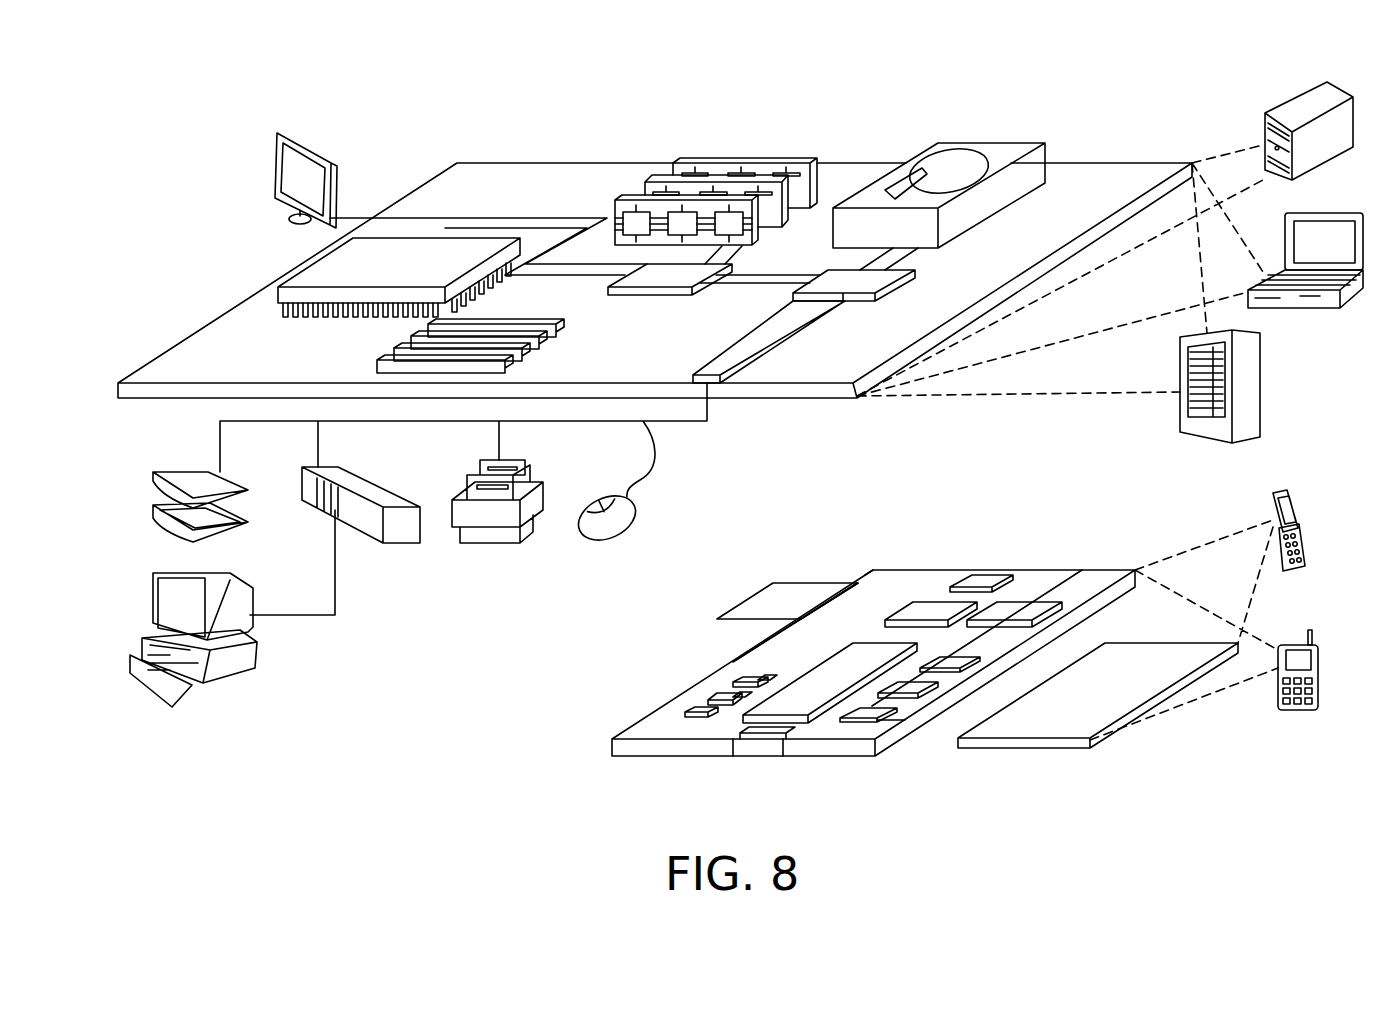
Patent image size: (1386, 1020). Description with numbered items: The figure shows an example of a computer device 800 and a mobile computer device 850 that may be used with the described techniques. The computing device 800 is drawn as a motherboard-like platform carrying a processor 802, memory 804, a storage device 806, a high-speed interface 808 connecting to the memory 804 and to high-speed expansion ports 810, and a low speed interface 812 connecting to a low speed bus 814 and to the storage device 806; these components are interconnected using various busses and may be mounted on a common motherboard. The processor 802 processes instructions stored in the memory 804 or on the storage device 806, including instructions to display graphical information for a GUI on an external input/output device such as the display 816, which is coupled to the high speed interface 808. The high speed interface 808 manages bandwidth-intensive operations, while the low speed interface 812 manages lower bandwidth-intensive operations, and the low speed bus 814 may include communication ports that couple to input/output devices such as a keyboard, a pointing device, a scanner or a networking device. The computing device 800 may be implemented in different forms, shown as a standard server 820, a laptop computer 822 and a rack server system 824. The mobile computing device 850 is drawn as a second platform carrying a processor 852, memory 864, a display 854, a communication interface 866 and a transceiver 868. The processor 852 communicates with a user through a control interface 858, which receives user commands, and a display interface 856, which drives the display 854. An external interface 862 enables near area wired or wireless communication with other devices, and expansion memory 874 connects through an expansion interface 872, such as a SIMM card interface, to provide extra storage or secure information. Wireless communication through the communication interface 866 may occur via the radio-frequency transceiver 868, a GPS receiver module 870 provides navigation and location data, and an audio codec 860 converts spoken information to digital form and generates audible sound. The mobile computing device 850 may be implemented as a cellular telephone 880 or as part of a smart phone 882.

The computing device 800 is at (408, 112).
The processor 802 is at (303, 268).
The memory 804 is at (750, 160).
The storage device 806 is at (976, 143).
The high-speed interface 808 is at (683, 272).
The high-speed expansion ports 810 is at (405, 356).
The low speed interface 812 is at (826, 287).
The low speed bus 814 is at (712, 375).
The display 816 is at (280, 134).
The standard server 820 is at (1285, 112).
The laptop computer 822 is at (1340, 213).
The rack server system 824 is at (1262, 388).
The mobile computer device 850 is at (567, 764).
The processor 852 is at (800, 690).
The display 854 is at (1137, 655).
The display interface 856 is at (875, 713).
The control interface 858 is at (915, 688).
The audio codec 860 is at (953, 660).
The external interface 862 is at (760, 757).
The memory 864 is at (712, 693).
The communication interface 866 is at (930, 605).
The transceiver 868 is at (1022, 600).
The GPS receiver module 870 is at (985, 578).
The expansion interface 872 is at (858, 580).
The expansion memory 874 is at (773, 582).
The cellular telephone 880 is at (1284, 494).
The smart phone 882 is at (1290, 643).